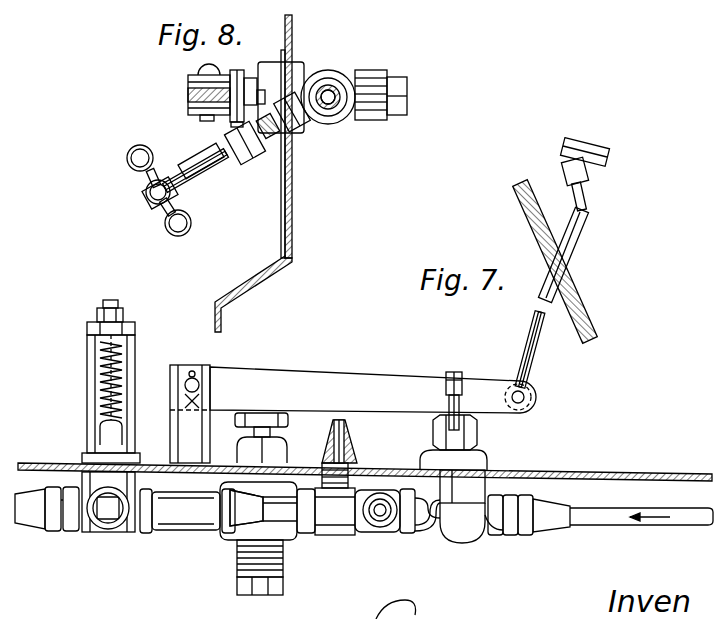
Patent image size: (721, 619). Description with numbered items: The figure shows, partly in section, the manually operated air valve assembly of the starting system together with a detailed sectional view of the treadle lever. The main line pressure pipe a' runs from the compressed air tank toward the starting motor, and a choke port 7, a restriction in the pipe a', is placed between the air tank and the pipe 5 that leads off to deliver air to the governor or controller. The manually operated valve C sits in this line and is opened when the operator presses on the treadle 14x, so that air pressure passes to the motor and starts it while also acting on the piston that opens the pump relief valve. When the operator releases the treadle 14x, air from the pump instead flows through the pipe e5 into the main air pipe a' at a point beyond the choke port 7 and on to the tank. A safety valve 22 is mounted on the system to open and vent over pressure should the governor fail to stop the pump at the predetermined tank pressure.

In FIG. 8, the treadle 14x is at (190, 93).
In FIG. 7, the treadle 14x is at (360, 388).
In FIG. 8, the pipe a' is at (344, 130).
In FIG. 7, the pipe a' is at (600, 530).
In FIG. 7, the pipe 5 is at (344, 425).
In FIG. 7, the safety valve 22 is at (100, 417).
In FIG. 7, the pipe e5 is at (17, 515).
In FIG. 7, the manually operated valve C is at (287, 527).
In FIG. 7, the choke port 7 is at (355, 535).